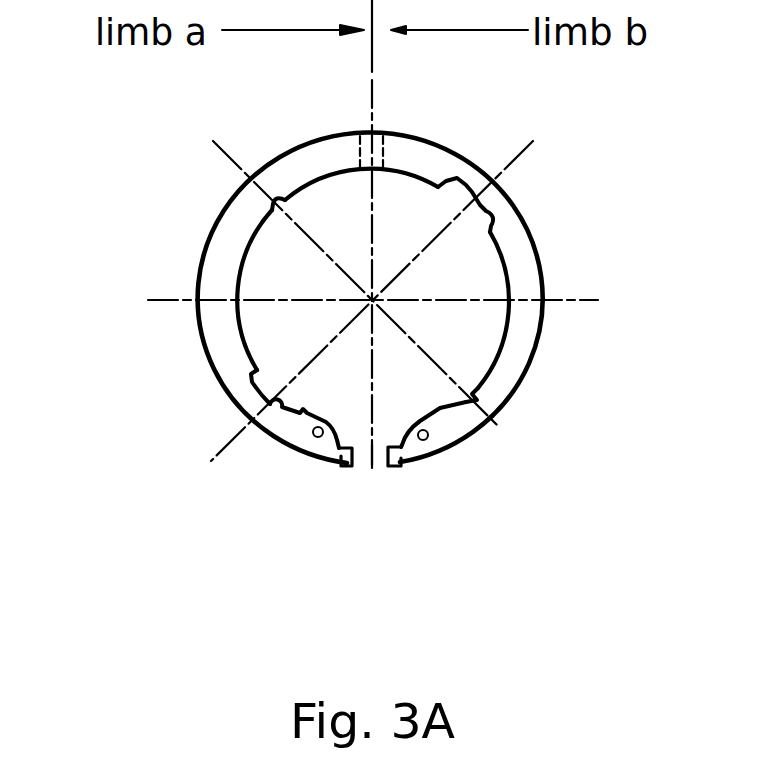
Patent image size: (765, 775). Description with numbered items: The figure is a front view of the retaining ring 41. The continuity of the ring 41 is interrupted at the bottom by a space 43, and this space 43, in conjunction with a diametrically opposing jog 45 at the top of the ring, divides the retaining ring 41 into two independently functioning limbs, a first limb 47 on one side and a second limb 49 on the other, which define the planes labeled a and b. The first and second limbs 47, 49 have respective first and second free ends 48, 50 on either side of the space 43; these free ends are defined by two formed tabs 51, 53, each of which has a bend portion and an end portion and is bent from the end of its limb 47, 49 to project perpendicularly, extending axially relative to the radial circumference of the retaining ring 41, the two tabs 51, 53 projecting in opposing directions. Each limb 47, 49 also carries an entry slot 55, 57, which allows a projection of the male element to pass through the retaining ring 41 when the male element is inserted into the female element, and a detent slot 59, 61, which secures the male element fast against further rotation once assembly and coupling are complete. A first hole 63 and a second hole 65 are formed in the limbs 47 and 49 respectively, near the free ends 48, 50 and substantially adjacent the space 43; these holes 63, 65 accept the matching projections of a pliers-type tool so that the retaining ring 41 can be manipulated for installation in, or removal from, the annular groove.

The retaining ring 41 is at (235, 367).
The space 43 is at (375, 463).
The jog 45 is at (383, 140).
The first limb 47 is at (233, 263).
The first free end 48 is at (348, 492).
The second limb 49 is at (527, 270).
The second free end 50 is at (410, 478).
The first tab 51 is at (343, 462).
The second tab 53 is at (447, 456).
The first entry slot 55 is at (280, 436).
The second entry slot 57 is at (498, 198).
The first detent slot 59 is at (246, 188).
The second detent slot 61 is at (486, 406).
The first hole 63 is at (316, 434).
The second hole 65 is at (428, 436).